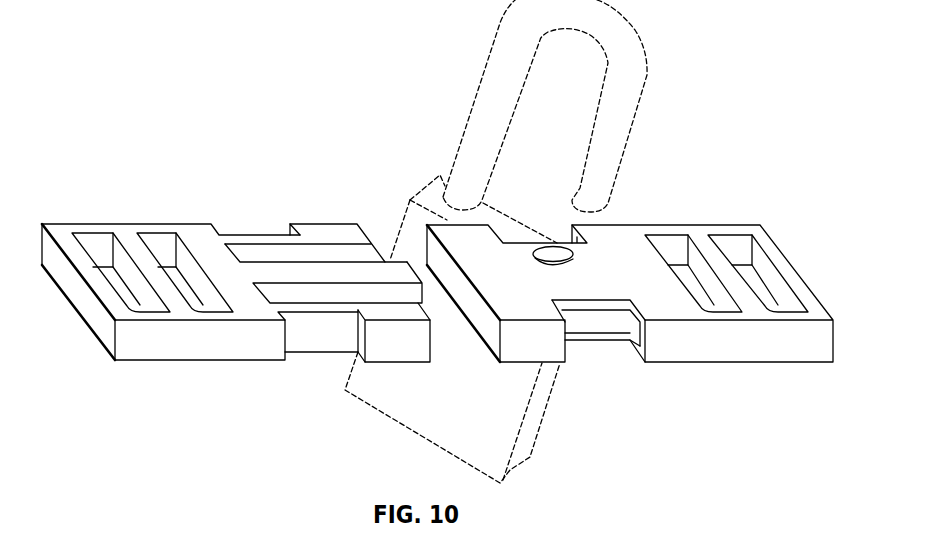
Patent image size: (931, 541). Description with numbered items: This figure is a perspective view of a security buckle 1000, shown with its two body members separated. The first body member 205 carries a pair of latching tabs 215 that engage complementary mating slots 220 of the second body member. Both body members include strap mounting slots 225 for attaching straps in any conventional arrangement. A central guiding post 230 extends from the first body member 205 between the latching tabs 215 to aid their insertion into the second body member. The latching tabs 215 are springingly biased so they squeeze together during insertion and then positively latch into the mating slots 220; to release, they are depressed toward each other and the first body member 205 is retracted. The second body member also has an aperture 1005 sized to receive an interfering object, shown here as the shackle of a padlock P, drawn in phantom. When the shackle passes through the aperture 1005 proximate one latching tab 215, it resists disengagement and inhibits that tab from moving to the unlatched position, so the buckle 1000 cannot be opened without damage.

The security buckle 1000 is at (132, 157).
The first body member 205 is at (127, 224).
The latching tabs 215 is at (325, 224).
The mating slots 220 is at (533, 219).
The strap mounting slots 225 is at (125, 303).
The central guiding post 230 is at (387, 261).
The aperture 1005 is at (571, 258).
The padlock P is at (545, 420).